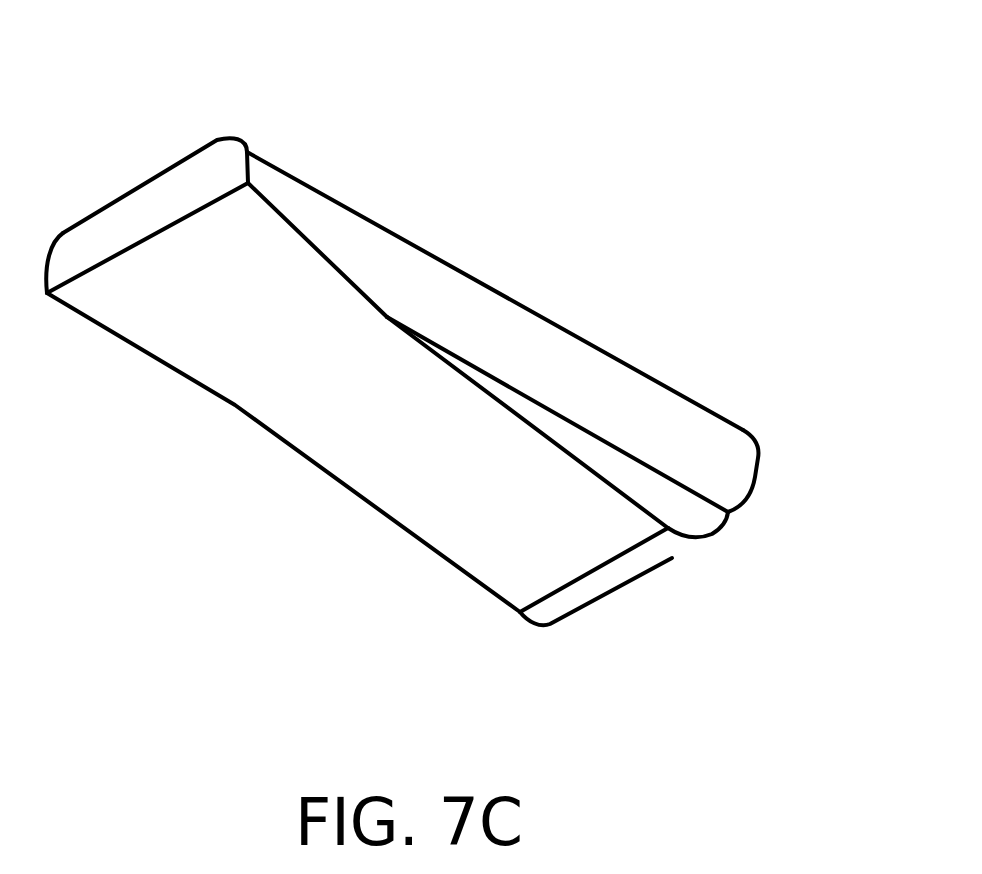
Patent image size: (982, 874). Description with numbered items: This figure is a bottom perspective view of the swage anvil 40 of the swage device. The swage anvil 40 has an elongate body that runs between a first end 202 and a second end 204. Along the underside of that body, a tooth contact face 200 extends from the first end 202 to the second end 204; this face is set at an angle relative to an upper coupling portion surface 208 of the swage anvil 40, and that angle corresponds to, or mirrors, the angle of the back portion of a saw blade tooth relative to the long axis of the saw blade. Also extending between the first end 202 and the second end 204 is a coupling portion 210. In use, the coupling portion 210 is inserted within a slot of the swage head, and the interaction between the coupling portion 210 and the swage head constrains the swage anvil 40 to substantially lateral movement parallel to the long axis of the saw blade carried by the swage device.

The swage anvil 40 is at (660, 230).
The tooth contact face 200 is at (343, 425).
The first end 202 is at (217, 97).
The second end 204 is at (768, 382).
The upper coupling portion surface 208 is at (410, 240).
The coupling portion 210 is at (733, 466).